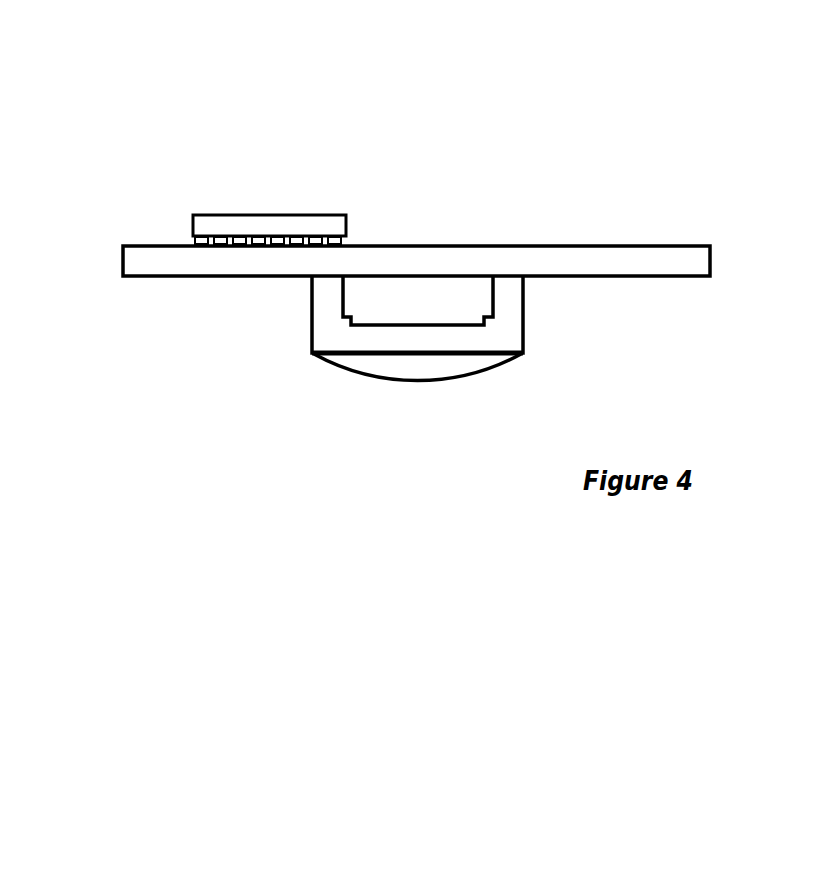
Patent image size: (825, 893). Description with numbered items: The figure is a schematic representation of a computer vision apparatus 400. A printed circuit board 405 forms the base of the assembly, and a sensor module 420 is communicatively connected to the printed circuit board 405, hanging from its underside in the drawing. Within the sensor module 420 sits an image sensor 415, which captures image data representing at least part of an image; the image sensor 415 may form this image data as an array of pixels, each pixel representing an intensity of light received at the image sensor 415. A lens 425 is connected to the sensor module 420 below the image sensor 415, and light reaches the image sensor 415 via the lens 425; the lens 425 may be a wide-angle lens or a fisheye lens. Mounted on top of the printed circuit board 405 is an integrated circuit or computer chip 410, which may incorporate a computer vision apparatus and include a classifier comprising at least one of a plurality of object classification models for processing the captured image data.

The computer vision apparatus 400 is at (97, 124).
The printed circuit board 405 is at (623, 245).
The computer chip 410 is at (266, 213).
The image sensor 415 is at (340, 300).
The sensor module 420 is at (525, 322).
The lens 425 is at (420, 382).